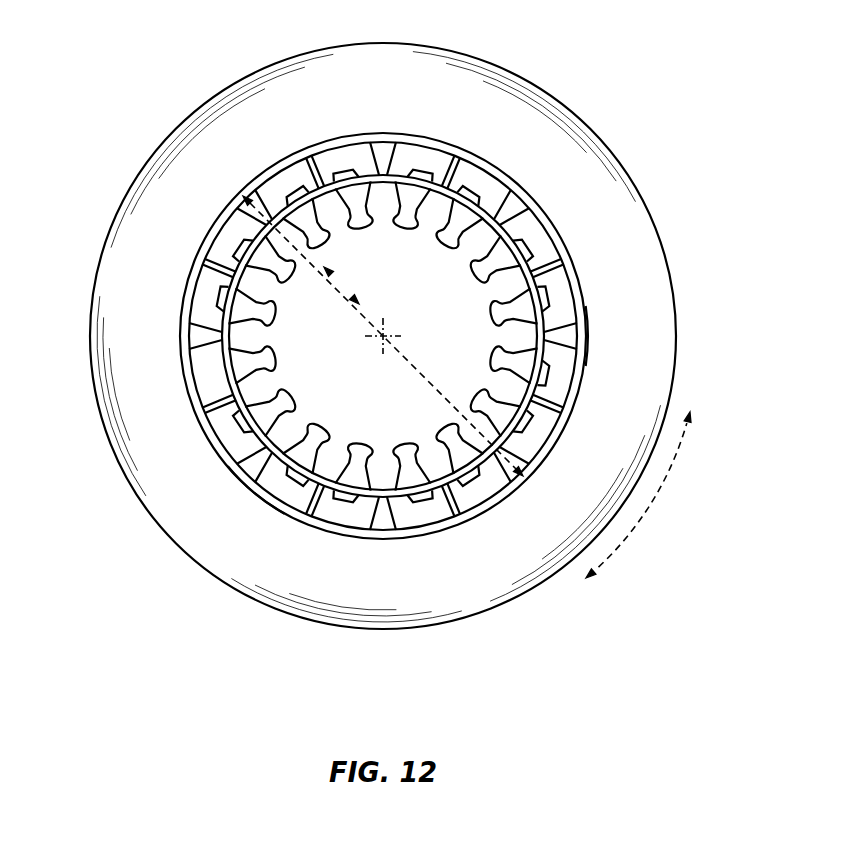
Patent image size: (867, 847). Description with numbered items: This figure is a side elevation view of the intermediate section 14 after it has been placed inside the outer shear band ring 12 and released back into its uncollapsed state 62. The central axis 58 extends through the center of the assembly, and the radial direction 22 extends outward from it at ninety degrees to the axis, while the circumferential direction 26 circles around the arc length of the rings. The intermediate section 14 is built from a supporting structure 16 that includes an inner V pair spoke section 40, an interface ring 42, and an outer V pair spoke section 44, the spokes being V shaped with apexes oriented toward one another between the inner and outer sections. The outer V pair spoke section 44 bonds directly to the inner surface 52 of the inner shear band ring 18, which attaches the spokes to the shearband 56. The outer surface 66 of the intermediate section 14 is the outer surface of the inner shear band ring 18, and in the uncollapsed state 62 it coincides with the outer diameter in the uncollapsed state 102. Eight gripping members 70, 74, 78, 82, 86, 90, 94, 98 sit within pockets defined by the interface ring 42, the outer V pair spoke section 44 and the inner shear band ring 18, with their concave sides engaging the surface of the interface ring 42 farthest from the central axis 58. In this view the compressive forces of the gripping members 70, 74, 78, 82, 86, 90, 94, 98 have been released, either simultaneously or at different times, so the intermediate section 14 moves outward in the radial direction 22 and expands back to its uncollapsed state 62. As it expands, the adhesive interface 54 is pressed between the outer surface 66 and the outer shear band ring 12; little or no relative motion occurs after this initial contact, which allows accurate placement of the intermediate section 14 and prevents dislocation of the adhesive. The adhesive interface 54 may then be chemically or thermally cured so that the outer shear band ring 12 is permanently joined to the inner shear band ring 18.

The outer shear band ring 12 is at (482, 578).
The intermediate section 14 is at (383, 530).
The supporting structure 16 is at (478, 162).
The inner shear band ring 18 is at (227, 463).
The radial direction 22 is at (343, 286).
The circumferential direction 26 is at (648, 502).
The inner V pair spoke section 40 is at (318, 432).
The interface ring 42 is at (497, 222).
The outer V pair spoke section 44 is at (553, 265).
The inner surface 52 is at (529, 437).
The adhesive interface 54 is at (292, 513).
The shearband 56 is at (152, 242).
The central axis 58 is at (386, 333).
The uncollapsed state 62 is at (376, 131).
The outer surface 66 is at (589, 332).
The gripping member 70 is at (353, 152).
The gripping member 74 is at (421, 152).
The gripping member 78 is at (565, 303).
The gripping member 82 is at (540, 371).
The gripping member 86 is at (430, 522).
The gripping member 90 is at (335, 522).
The gripping member 94 is at (222, 372).
The gripping member 98 is at (210, 302).
The outer diameter in the uncollapsed state 102 is at (447, 402).